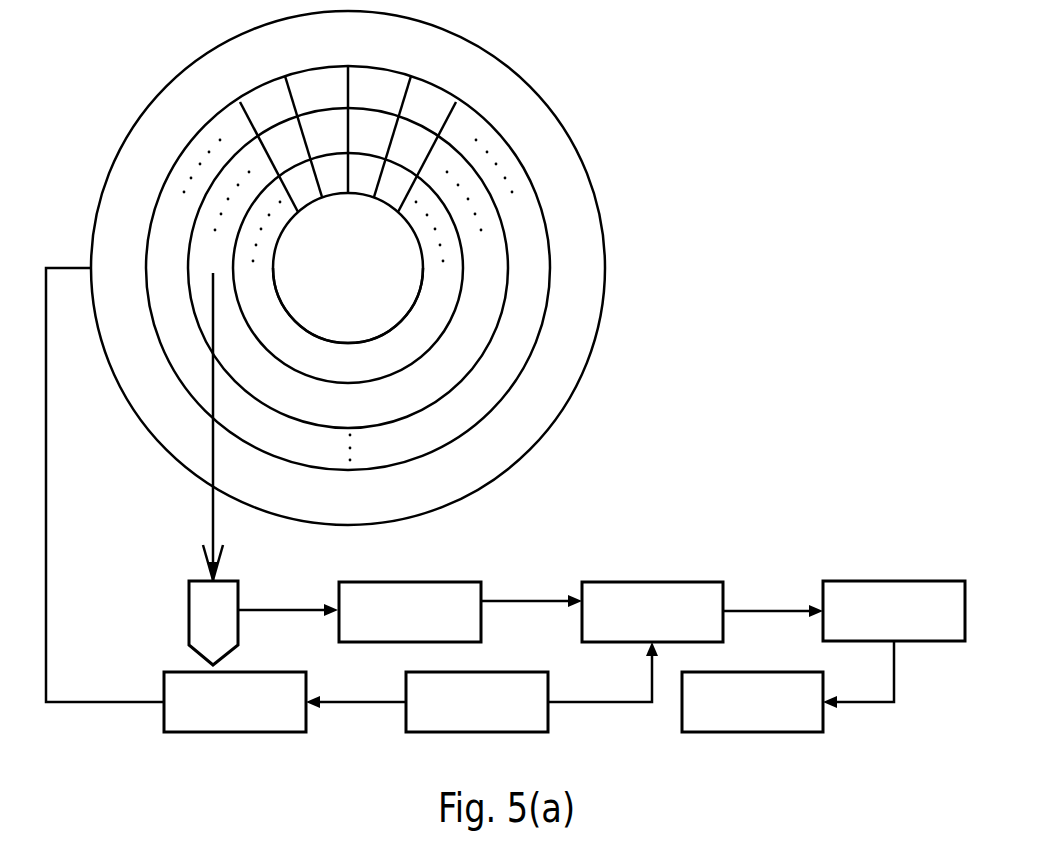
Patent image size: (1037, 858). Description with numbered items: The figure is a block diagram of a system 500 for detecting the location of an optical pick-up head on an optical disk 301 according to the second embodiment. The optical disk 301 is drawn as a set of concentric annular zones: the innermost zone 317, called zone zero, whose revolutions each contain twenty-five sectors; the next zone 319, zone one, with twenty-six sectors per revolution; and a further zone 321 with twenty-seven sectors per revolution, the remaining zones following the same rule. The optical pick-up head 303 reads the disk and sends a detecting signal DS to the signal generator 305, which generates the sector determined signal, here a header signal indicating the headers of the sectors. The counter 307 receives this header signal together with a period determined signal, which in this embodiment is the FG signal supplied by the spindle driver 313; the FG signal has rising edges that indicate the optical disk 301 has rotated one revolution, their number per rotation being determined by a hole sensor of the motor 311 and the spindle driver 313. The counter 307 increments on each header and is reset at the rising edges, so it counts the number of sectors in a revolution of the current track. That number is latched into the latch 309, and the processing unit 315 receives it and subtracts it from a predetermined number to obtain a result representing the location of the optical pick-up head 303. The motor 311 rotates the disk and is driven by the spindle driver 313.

The system 500 is at (883, 220).
The optical disk 301 is at (391, 270).
The optical pick-up head 303 is at (189, 614).
The signal generator 305 is at (455, 582).
The counter 307 is at (615, 582).
The latch 309 is at (895, 581).
The motor 311 is at (236, 732).
The spindle driver 313 is at (477, 732).
The processing unit 315 is at (752, 732).
The innermost zone 317 is at (438, 322).
The next zone 319 is at (490, 300).
The zone 321 is at (537, 233).